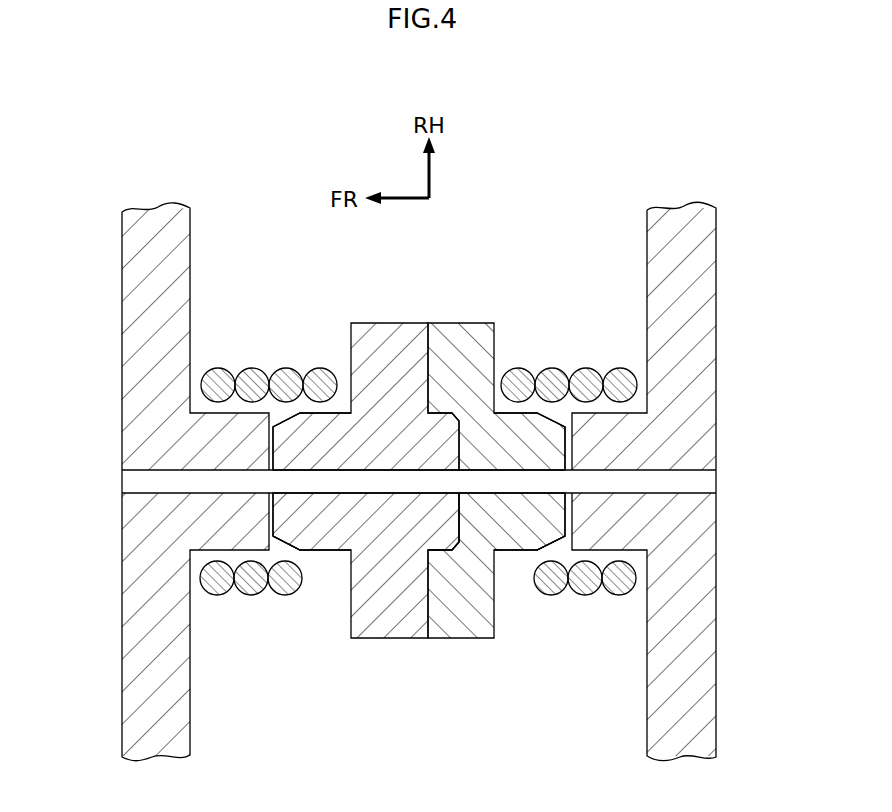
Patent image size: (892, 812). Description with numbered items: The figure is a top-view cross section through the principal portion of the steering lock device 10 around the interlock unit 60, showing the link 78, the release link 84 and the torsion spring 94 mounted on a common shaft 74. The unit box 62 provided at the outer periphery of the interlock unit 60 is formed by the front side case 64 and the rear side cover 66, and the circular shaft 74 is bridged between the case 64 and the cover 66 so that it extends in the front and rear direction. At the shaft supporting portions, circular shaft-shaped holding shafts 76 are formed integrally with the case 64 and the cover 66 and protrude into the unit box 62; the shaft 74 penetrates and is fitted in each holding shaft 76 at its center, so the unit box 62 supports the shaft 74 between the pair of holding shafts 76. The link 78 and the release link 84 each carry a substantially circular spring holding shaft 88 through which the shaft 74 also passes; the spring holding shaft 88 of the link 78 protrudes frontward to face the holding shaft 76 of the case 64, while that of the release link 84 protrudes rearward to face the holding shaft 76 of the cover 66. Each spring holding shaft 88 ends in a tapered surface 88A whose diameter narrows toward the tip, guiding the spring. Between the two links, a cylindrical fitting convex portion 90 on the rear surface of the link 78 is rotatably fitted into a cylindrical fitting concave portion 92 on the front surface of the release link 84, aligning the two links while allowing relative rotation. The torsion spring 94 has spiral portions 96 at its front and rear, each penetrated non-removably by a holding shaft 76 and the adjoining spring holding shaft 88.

The steering lock device 10 is at (422, 481).
The interlock unit 60 is at (255, 172).
The unit box 62 is at (422, 481).
The case 64 is at (122, 259).
The cover 66 is at (716, 275).
The shaft 74 is at (698, 481).
The holding shaft 76 is at (218, 400).
The link 78 is at (387, 322).
The release link 84 is at (463, 322).
The spring holding shaft 88 is at (327, 551).
The tapered surface 88A is at (287, 549).
The fitting convex portion 90 is at (452, 545).
The fitting concave portion 92 is at (462, 543).
The torsion spring 94 is at (418, 454).
The spiral portion 96 is at (257, 370).